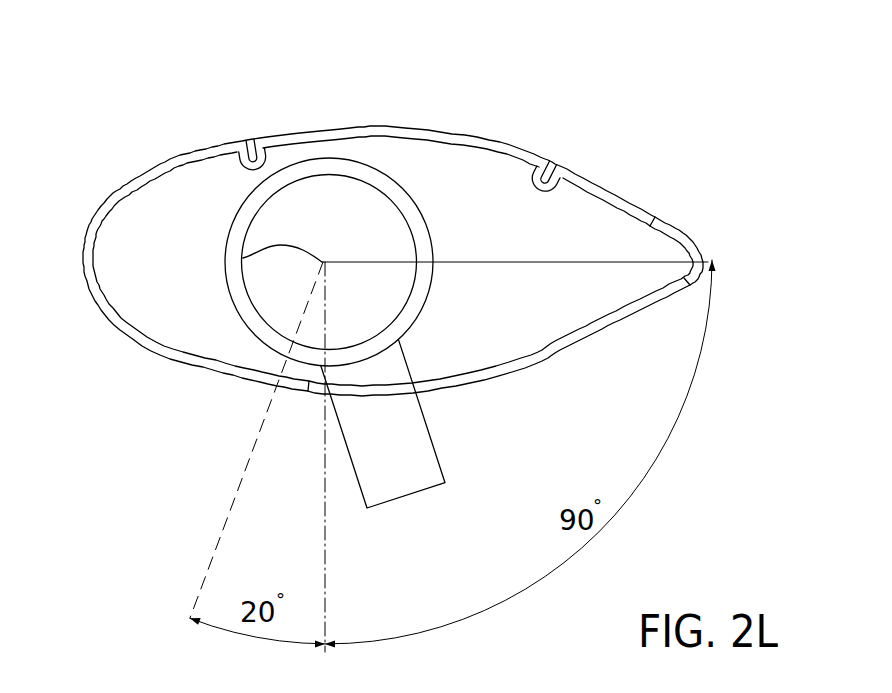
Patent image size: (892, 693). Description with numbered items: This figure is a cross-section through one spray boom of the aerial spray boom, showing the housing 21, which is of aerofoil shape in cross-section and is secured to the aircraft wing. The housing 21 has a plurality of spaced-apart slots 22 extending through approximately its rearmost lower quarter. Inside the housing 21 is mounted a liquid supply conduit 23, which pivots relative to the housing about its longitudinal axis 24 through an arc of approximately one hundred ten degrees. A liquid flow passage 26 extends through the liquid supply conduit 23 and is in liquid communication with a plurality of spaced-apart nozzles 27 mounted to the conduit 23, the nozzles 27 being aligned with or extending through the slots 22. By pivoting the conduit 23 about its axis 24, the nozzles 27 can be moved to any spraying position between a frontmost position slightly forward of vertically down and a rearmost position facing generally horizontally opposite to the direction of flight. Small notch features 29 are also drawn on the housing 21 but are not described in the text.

The housing 21 is at (638, 207).
The slots 22 is at (535, 364).
The liquid supply conduit 23 is at (352, 158).
The longitudinal axis 24 is at (243, 258).
The liquid flow passage 26 is at (353, 234).
The nozzle 27 is at (393, 470).
The notches 29 is at (251, 152).